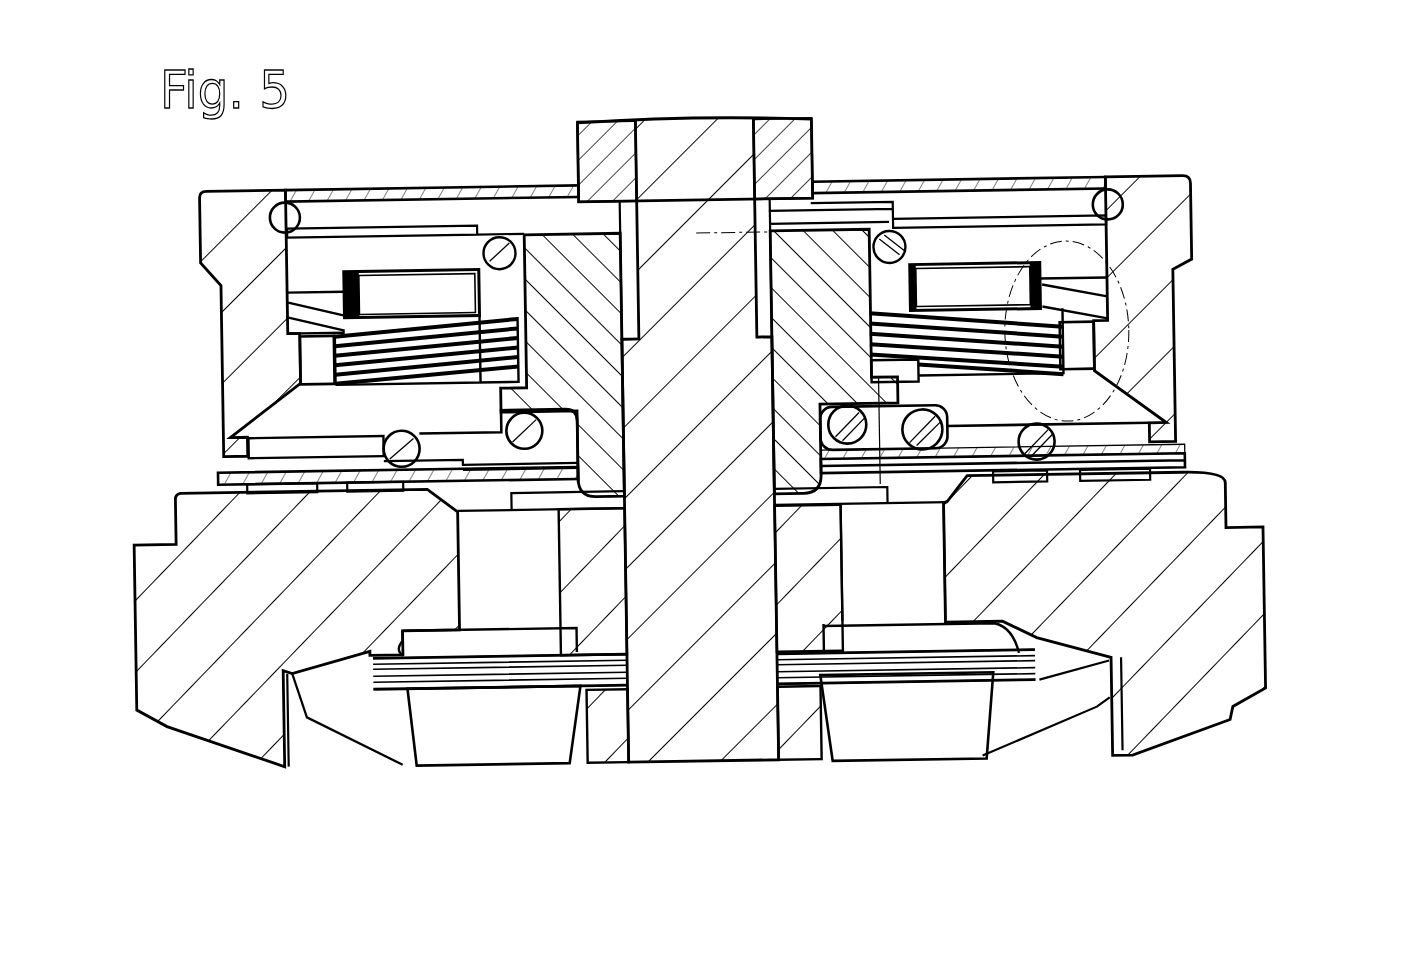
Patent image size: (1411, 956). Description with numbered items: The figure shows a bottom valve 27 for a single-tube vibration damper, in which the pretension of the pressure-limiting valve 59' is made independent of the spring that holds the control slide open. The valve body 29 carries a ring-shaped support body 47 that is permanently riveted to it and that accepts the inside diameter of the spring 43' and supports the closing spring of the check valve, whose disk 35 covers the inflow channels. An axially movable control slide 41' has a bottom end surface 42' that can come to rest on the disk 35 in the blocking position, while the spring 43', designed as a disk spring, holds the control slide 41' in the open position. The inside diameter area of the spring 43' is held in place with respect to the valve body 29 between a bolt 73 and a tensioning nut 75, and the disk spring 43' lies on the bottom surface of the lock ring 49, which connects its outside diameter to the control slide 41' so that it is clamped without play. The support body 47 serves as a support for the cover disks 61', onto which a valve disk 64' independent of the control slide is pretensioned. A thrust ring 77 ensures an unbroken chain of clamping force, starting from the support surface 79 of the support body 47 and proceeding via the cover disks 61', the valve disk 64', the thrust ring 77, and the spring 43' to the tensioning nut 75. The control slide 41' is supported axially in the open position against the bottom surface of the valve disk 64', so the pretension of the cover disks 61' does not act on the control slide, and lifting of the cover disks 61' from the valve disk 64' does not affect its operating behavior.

The bottom valve 27 is at (1206, 162).
The valve body 29 is at (1214, 638).
The disk 35 is at (218, 465).
The control slide 41' is at (813, 351).
The end surface 42' is at (1073, 456).
The spring 43' is at (695, 142).
The support body 47 is at (819, 352).
The lock ring 49 is at (1118, 210).
The pressure-limiting valve 59' is at (801, 345).
The cover disks 61' is at (801, 335).
The valve disk 64' is at (796, 294).
The bolt 73 is at (655, 757).
The tensioning nut 75 is at (792, 139).
The thrust ring 77 is at (882, 340).
The support surface 79 is at (880, 440).